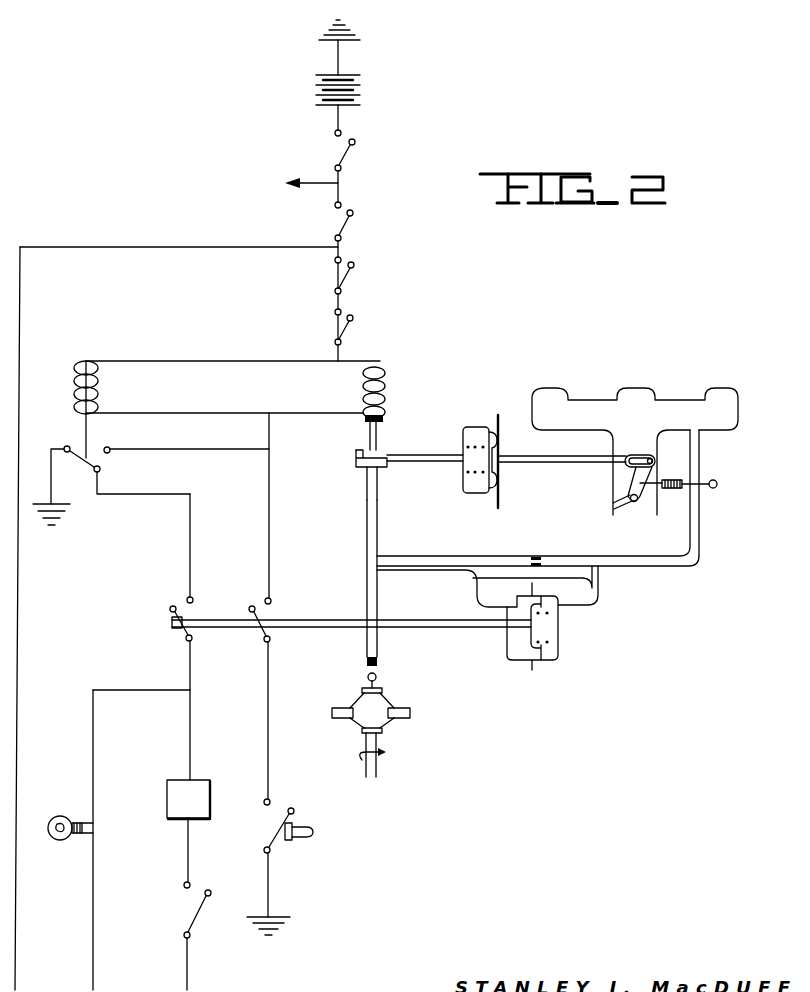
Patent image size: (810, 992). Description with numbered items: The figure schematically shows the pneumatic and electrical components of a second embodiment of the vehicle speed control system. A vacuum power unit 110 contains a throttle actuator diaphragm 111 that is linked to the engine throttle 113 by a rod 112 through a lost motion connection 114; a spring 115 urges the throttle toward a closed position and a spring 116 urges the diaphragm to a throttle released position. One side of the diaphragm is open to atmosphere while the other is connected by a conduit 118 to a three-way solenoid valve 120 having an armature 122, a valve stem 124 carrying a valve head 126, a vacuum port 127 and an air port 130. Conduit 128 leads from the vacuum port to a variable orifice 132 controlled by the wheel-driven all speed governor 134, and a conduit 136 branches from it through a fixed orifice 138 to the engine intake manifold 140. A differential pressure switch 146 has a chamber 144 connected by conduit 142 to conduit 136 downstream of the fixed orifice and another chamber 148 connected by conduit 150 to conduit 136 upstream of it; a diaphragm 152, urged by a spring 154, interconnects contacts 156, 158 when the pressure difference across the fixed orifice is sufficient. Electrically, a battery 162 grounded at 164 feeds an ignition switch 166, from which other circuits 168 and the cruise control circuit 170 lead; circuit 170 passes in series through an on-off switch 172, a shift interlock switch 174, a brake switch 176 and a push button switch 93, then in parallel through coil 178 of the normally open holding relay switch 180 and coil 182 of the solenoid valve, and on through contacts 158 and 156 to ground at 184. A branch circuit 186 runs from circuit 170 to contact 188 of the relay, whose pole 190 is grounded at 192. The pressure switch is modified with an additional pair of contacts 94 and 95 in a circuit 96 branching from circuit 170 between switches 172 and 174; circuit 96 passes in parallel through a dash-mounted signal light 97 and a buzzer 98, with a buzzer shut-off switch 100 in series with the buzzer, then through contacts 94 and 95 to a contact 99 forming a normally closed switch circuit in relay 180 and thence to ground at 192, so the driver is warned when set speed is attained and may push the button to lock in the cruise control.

The push button switch 93 is at (315, 832).
The contact 94 is at (178, 633).
The contact 95 is at (194, 600).
The circuit 96 is at (175, 246).
The dash-mounted signal light 97 is at (72, 836).
The buzzer 98 is at (167, 798).
The contact 99 is at (99, 473).
The buzzer shut-off switch 100 is at (196, 912).
The vacuum power unit 110 is at (482, 441).
The throttle actuator diaphragm 111 is at (500, 447).
The rod 112 is at (529, 466).
The engine throttle 113 is at (618, 508).
The lost motion connection 114 is at (632, 455).
The spring 115 is at (672, 489).
The spring 116 is at (473, 494).
The conduit 118 is at (449, 464).
The three-way solenoid valve 120 is at (369, 429).
The armature 122 is at (383, 390).
The valve stem 124 is at (378, 428).
The valve head 126 is at (383, 460).
The vacuum port 127 is at (371, 470).
The conduit 128 is at (367, 601).
The air port 130 is at (380, 445).
The variable orifice 132 is at (377, 680).
The wheel-driven all speed governor 134 is at (396, 722).
The conduit 136 is at (700, 548).
The fixed orifice 138 is at (538, 557).
The engine intake manifold 140 is at (718, 427).
The conduit 142 is at (595, 590).
The chamber 144 is at (556, 657).
The differential pressure switch 146 is at (557, 633).
The chamber 148 is at (507, 650).
The conduit 150 is at (471, 590).
The diaphragm 152 is at (530, 604).
The spring 154 is at (552, 640).
The electrical switch contact 156 is at (264, 641).
The electrical switch contact 158 is at (272, 600).
The battery 162 is at (361, 92).
The ground 164 is at (347, 33).
The ignition switch 166 is at (355, 157).
The other circuits line 168 is at (323, 182).
The cruise control circuit line 170 is at (339, 193).
The on-off switch 172 is at (338, 224).
The shift interlock switch 174 is at (353, 276).
The brake switch 176 is at (343, 323).
The coil 178 is at (98, 394).
The holding relay switch 180 is at (92, 450).
The coil 182 is at (366, 387).
The ground 184 is at (283, 928).
The branch circuit 186 is at (183, 449).
The contact 188 is at (109, 453).
The pole 190 is at (68, 458).
The ground 192 is at (58, 524).